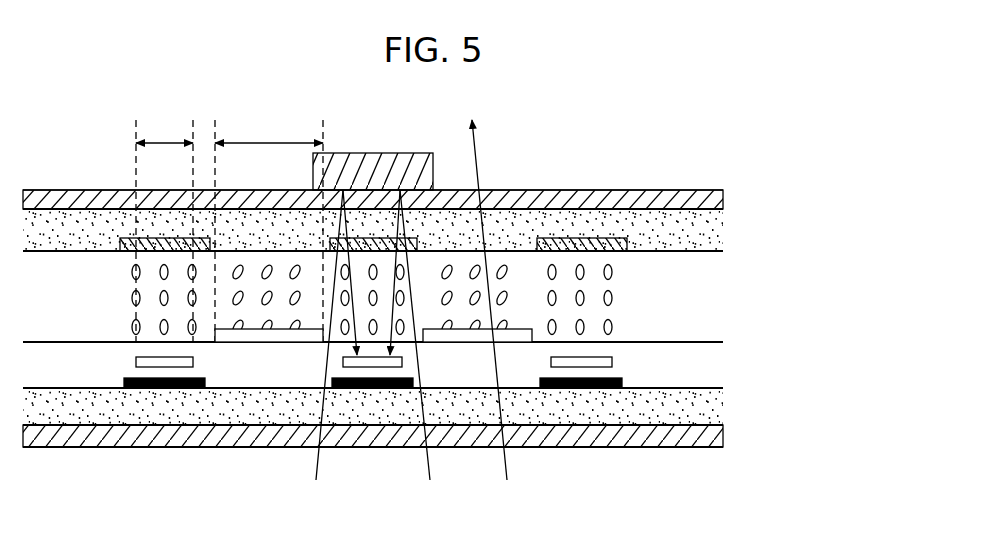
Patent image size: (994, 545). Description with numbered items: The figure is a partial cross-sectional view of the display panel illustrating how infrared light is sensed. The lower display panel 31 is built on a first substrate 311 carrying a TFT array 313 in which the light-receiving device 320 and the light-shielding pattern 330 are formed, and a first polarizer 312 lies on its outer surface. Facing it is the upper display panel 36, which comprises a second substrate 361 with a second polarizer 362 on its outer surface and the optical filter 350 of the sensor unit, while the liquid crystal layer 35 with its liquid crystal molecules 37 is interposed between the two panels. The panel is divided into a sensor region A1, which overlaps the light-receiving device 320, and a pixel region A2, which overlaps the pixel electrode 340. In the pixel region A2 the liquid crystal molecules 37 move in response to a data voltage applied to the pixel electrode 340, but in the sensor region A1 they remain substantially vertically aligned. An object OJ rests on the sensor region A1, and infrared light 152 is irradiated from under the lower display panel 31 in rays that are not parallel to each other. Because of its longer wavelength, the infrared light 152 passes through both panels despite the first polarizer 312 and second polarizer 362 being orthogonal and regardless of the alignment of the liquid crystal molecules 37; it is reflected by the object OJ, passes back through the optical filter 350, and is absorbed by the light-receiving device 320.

The upper display panel 36 is at (433, 220).
The second polarizer 362 is at (723, 200).
The second substrate 361 is at (707, 232).
The optical filter 350 is at (590, 240).
The object OJ is at (374, 166).
The sensor region A1 is at (164, 229).
The pixel region A2 is at (269, 229).
The liquid crystal layer 35 is at (405, 300).
The liquid crystal molecules 37 is at (612, 268).
The pixel electrode 340 is at (253, 337).
The TFT array 313 is at (707, 369).
The light-shielding pattern 330 is at (159, 389).
The light-receiving device 320 is at (138, 362).
The lower display panel 31 is at (433, 411).
The first substrate 311 is at (707, 408).
The first polarizer 312 is at (408, 438).
The infrared light 152 is at (428, 462).